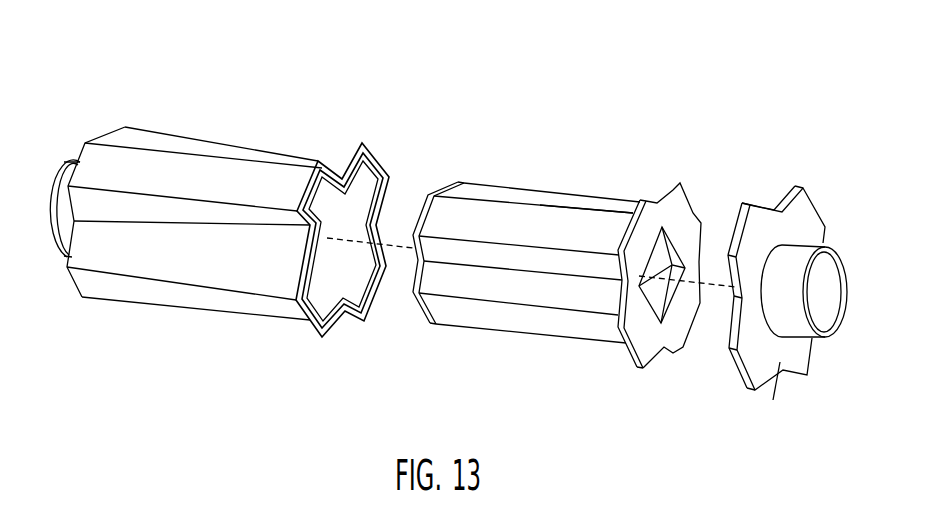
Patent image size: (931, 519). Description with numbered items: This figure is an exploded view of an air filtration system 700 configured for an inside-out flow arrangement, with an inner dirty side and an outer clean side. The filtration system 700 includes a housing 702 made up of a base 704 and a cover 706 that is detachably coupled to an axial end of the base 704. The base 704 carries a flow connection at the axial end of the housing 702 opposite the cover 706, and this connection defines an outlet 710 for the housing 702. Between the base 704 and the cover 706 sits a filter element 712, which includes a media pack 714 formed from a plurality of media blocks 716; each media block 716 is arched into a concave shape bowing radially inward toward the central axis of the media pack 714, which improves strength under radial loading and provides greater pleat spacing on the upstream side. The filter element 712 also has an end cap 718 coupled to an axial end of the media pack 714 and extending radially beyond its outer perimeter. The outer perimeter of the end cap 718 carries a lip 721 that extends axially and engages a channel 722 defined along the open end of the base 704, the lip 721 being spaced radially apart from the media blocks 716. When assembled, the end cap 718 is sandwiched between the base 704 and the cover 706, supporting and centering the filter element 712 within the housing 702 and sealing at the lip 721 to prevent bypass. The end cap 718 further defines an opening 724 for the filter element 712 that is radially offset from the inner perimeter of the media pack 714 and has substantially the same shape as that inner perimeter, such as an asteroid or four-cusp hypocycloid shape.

The filtration system 700 is at (407, 92).
The housing 702 is at (262, 148).
The base 704 is at (217, 295).
The cover 706 is at (803, 218).
The outlet 710 is at (60, 236).
The filter element 712 is at (557, 165).
The media pack 714 is at (493, 312).
The media blocks 716 is at (590, 230).
The end cap 718 is at (637, 340).
The lip 721 is at (673, 188).
The channel 722 is at (363, 323).
The opening 724 is at (672, 300).